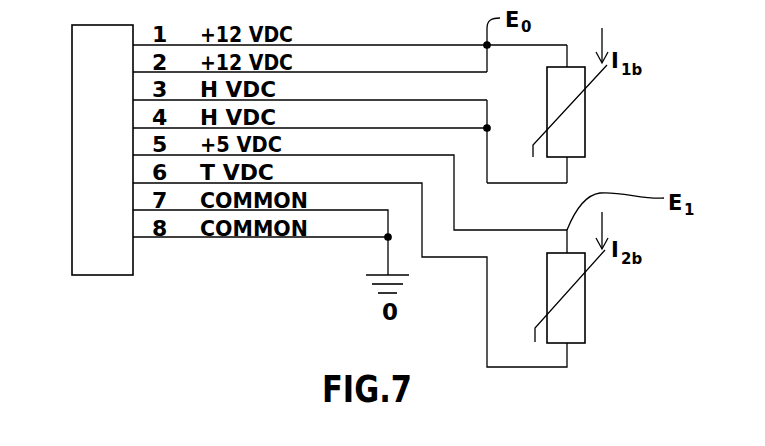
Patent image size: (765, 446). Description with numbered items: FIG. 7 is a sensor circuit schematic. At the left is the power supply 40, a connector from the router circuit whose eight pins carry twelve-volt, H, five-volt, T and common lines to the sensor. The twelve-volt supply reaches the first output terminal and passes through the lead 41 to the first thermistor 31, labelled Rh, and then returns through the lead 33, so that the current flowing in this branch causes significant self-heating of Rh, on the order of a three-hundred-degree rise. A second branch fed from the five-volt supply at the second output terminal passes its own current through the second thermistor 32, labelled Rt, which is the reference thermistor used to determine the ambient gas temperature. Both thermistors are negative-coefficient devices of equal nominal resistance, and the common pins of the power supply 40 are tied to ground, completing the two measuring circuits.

The power supply 40 is at (114, 146).
The lead 41 is at (397, 45).
The thermistor 31 is at (567, 128).
The thermistor 32 is at (572, 312).
The lead 33 is at (567, 183).